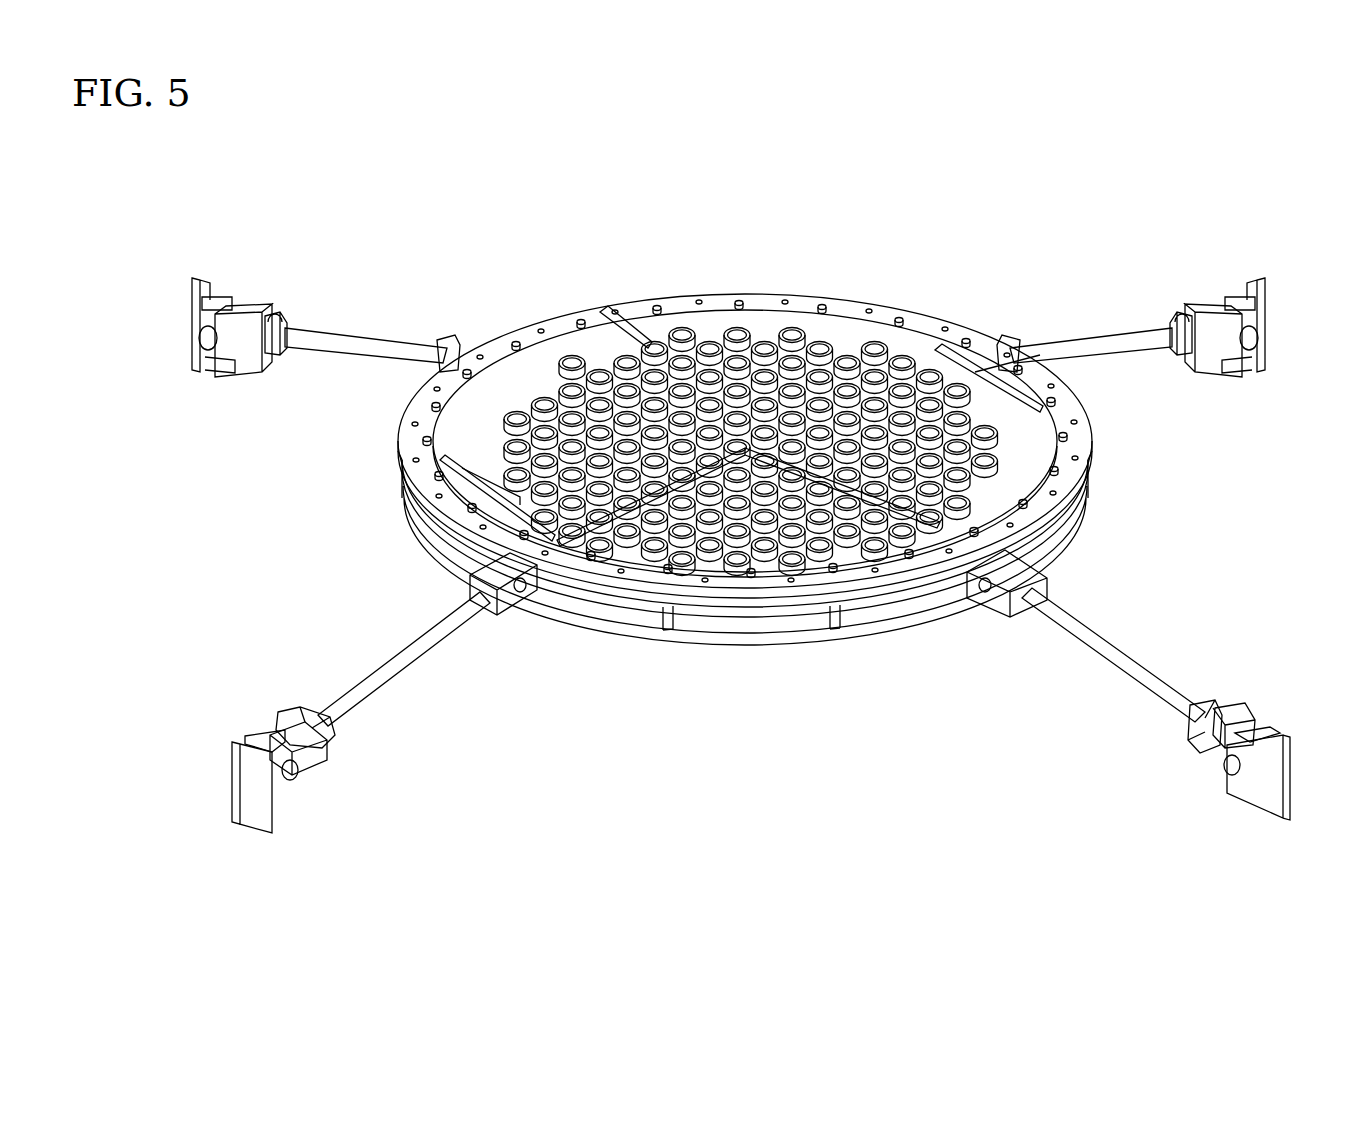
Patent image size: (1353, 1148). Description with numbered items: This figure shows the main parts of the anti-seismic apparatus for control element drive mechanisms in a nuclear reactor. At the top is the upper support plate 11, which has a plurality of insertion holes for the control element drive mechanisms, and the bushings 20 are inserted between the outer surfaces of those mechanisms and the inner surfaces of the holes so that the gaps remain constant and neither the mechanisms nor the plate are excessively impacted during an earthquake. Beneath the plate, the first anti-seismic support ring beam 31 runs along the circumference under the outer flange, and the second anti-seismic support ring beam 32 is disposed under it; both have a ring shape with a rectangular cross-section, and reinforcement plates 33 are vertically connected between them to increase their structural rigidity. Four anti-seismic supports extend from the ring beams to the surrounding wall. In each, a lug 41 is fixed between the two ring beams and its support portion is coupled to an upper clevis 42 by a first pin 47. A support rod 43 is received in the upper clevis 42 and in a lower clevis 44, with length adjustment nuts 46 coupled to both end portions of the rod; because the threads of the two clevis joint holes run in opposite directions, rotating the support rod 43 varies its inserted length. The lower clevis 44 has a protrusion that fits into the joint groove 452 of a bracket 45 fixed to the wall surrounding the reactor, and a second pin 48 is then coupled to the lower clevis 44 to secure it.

The upper support plate 11 is at (852, 330).
The bushings 20 is at (610, 340).
The first anti-seismic support ring beam 31 is at (1058, 541).
The second anti-seismic support ring beam 32 is at (745, 646).
The reinforcement plates 33 is at (665, 632).
The lug 41 is at (530, 582).
The upper clevis 42 is at (512, 614).
The support rod 43 is at (410, 656).
The lower clevis 44 is at (318, 748).
The bracket 45 is at (258, 802).
The joint groove 452 is at (250, 746).
The length adjustment nuts 46 is at (475, 596).
The first pin 47 is at (975, 602).
The second pin 48 is at (1222, 765).